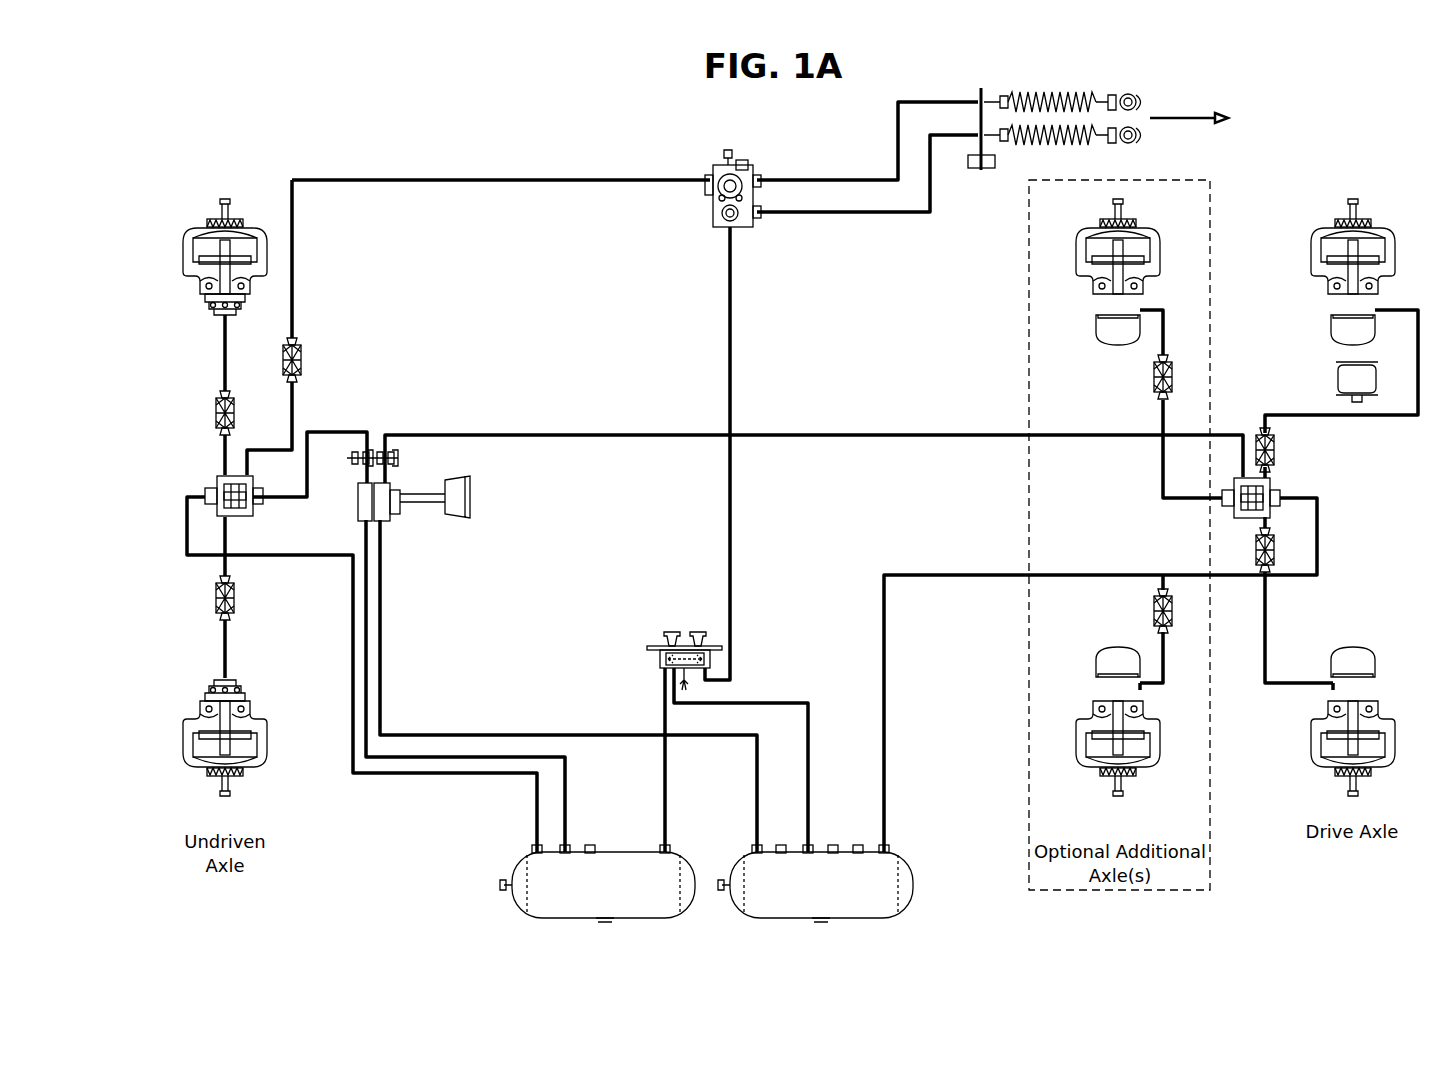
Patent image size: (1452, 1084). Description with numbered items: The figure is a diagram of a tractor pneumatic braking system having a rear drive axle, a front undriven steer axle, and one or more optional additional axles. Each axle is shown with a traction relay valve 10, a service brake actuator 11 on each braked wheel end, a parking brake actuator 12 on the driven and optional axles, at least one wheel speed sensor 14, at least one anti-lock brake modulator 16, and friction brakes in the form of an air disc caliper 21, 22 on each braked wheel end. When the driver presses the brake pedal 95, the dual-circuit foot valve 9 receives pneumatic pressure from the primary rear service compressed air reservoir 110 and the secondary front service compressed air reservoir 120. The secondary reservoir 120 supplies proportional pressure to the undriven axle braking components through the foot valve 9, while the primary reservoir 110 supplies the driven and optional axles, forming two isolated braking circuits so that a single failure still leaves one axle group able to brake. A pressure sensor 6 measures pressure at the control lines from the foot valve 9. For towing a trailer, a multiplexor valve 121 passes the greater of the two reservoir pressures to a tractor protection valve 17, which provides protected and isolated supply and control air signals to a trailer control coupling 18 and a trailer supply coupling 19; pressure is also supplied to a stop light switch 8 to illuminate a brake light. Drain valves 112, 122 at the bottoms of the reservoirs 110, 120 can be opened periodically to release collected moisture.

The pressure sensor 6 is at (356, 452).
The stop light switch 8 is at (713, 166).
The dual-circuit foot valve 9 is at (405, 520).
The traction relay valve 10 is at (240, 512).
The service brake actuator 11 is at (213, 315).
The parking brake actuator 12 is at (1103, 343).
The wheel speed sensor 14 is at (236, 203).
The anti-lock brake modulator 16 is at (302, 360).
The tractor protection valve 17 is at (713, 207).
The trailer control coupling 18 is at (1140, 98).
The trailer supply coupling 19 is at (1140, 140).
The air disc caliper 21 is at (183, 272).
The air disc caliper 22 is at (190, 722).
The brake pedal 95 is at (470, 498).
The primary (rear service) compressed air reservoir 110 is at (895, 858).
The drain valve 112 is at (822, 922).
The secondary (front service) compressed air reservoir 120 is at (530, 862).
The multiplexor valve 121 is at (655, 648).
The drain valve 122 is at (600, 922).